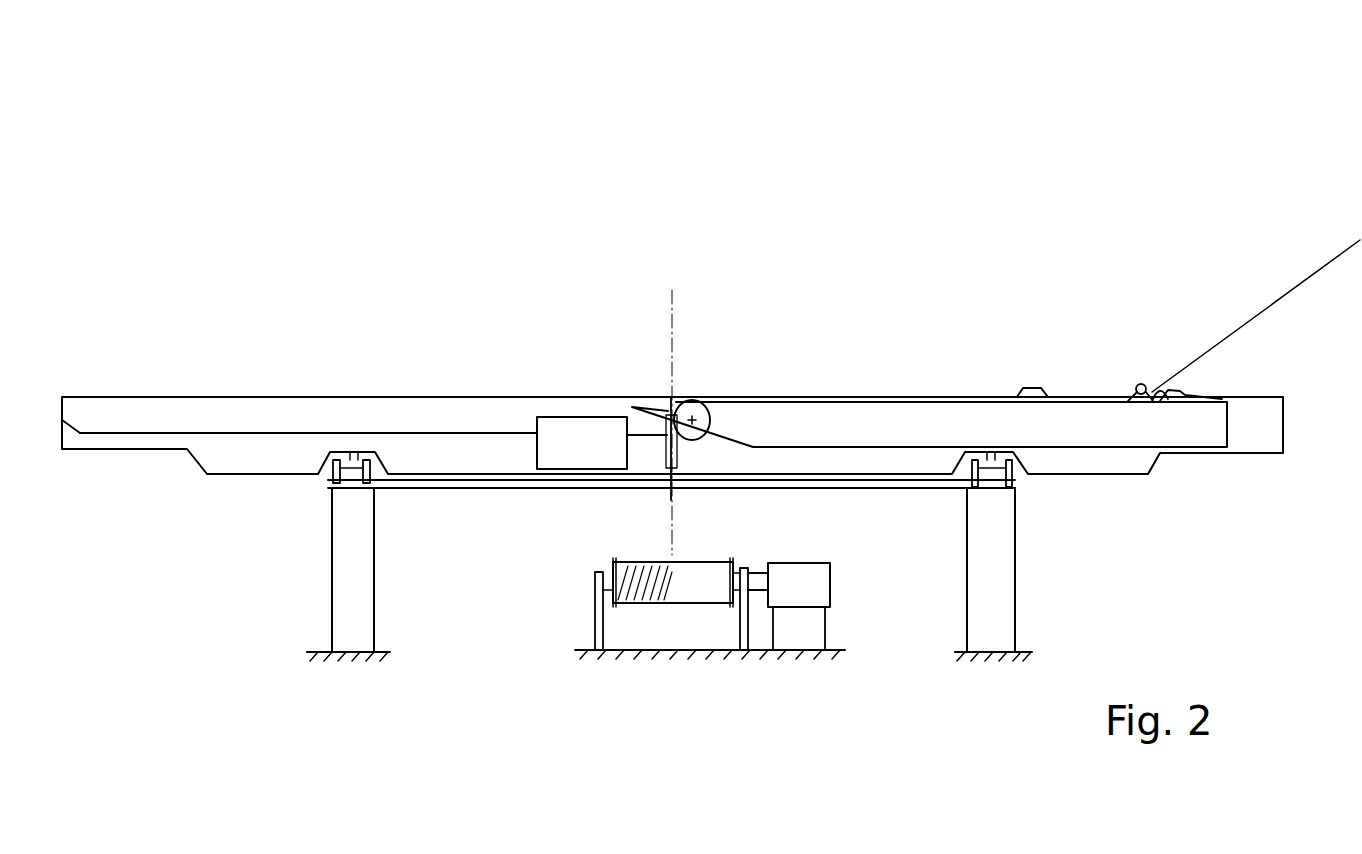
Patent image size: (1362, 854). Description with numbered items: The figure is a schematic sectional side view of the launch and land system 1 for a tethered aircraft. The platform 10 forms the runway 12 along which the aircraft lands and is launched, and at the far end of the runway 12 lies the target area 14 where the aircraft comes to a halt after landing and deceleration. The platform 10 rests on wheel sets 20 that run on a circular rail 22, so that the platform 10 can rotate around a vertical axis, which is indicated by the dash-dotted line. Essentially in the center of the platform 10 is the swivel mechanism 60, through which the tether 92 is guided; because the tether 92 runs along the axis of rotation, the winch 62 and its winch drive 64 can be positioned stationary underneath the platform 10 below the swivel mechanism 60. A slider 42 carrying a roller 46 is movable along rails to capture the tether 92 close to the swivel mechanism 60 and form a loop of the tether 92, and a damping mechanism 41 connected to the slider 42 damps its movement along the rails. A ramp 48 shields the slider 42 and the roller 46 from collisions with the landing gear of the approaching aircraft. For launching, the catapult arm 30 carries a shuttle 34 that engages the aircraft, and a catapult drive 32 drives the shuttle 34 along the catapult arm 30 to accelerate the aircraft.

The launch and land system 1 is at (123, 268).
The platform 10 is at (250, 458).
The runway 12 is at (845, 398).
The target area 14 is at (213, 392).
The wheel sets 20 is at (350, 475).
The circular rail 22 is at (498, 485).
The catapult arm 30 is at (337, 415).
The catapult drive 32 is at (563, 445).
The shuttle 34 is at (1028, 390).
The damping mechanism 41 is at (1110, 432).
The slider 42 is at (1135, 384).
The roller 46 is at (1143, 383).
The ramp 48 is at (1195, 393).
The swivel mechanism 60 is at (703, 400).
The winch 62 is at (692, 583).
The winch drive 64 is at (797, 585).
The tether 92 is at (1255, 315).